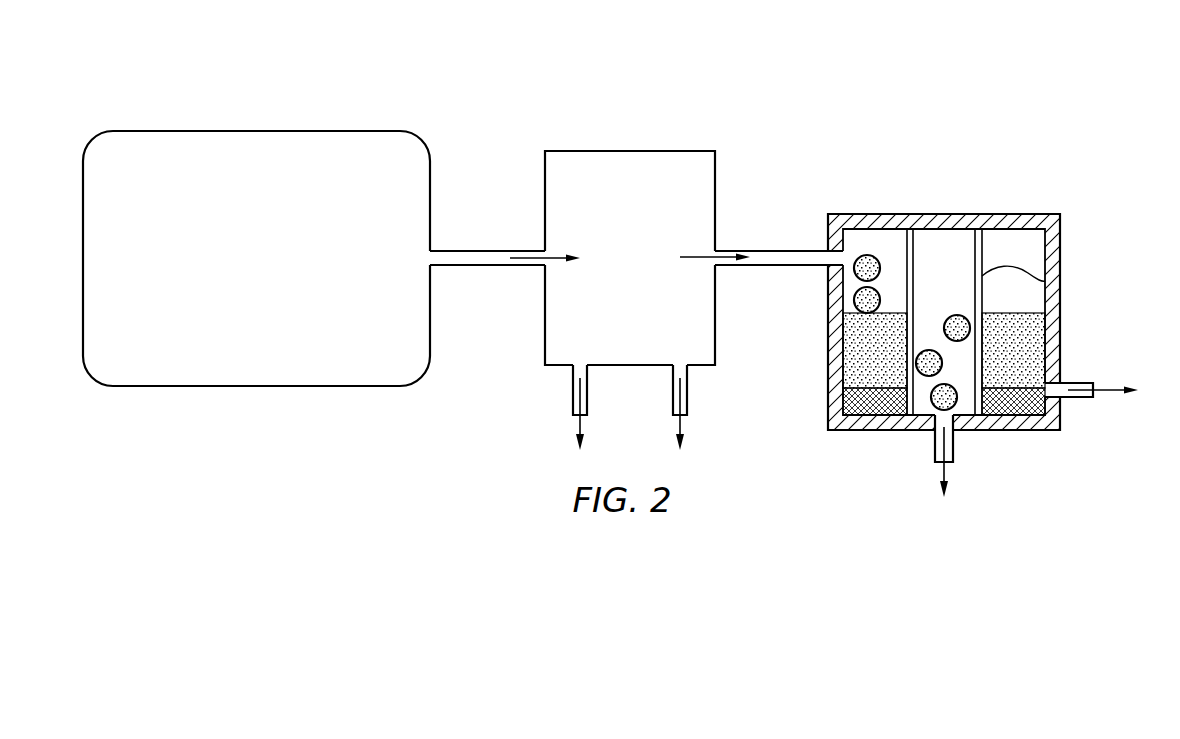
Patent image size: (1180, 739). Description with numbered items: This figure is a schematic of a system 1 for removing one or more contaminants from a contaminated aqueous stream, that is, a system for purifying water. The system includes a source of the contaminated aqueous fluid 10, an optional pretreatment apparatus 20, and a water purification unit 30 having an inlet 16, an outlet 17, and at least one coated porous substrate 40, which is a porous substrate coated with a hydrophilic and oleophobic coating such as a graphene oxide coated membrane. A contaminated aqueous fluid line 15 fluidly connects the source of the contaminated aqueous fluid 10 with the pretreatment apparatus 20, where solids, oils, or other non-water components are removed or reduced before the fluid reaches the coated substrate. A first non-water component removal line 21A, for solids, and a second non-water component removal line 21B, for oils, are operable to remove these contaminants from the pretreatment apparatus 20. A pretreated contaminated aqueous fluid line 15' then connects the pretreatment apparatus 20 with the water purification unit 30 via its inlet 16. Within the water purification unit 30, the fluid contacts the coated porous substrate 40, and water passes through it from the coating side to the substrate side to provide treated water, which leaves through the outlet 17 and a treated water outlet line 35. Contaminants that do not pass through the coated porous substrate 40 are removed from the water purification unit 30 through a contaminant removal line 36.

The system for removing contaminants from a contaminated aqueous fluid 1 is at (907, 45).
The source of the contaminated aqueous fluid 10 is at (247, 263).
The contaminated aqueous fluid line 15 is at (505, 275).
The pretreated contaminated aqueous fluid line 15' is at (754, 275).
The inlet 16 is at (836, 259).
The outlet 17 is at (951, 437).
The pretreatment apparatus 20 is at (620, 268).
The first non-water component removal line 21A is at (573, 398).
The second non-water component removal line 21B is at (687, 396).
The water purification unit 30 is at (1012, 190).
The treated water outlet line 35 is at (938, 470).
The contaminant removal line 36 is at (1110, 394).
The coated porous substrate 40 is at (1045, 281).